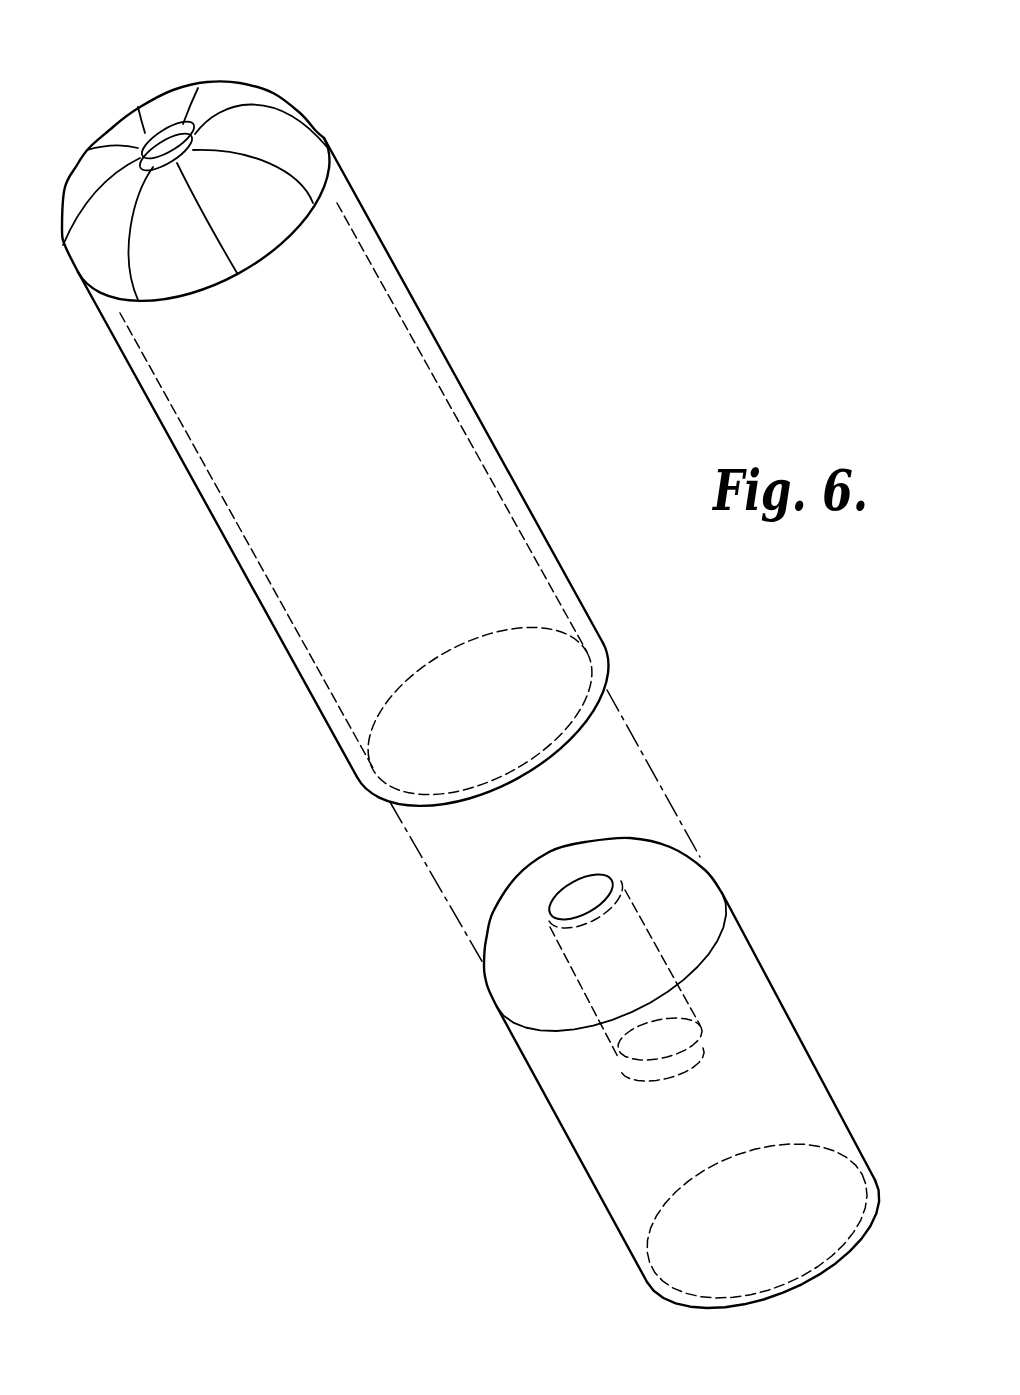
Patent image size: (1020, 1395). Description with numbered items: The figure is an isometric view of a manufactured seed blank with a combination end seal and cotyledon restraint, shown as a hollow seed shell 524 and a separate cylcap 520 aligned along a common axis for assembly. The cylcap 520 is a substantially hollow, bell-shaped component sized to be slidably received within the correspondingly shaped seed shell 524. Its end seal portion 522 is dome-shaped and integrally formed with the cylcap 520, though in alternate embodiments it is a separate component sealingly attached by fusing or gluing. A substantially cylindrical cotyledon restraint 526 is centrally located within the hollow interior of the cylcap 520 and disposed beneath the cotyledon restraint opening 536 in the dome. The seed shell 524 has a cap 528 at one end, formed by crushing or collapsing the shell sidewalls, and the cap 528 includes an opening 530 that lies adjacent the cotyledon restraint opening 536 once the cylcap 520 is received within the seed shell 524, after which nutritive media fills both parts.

The cylcap 520 is at (586, 1176).
The end seal portion 522 is at (513, 977).
The seed shell 524 is at (243, 570).
The cotyledon restraint 526 is at (607, 1037).
The cap 528 is at (237, 94).
The opening 530 is at (150, 138).
The cotyledon restraint opening 536 is at (570, 888).